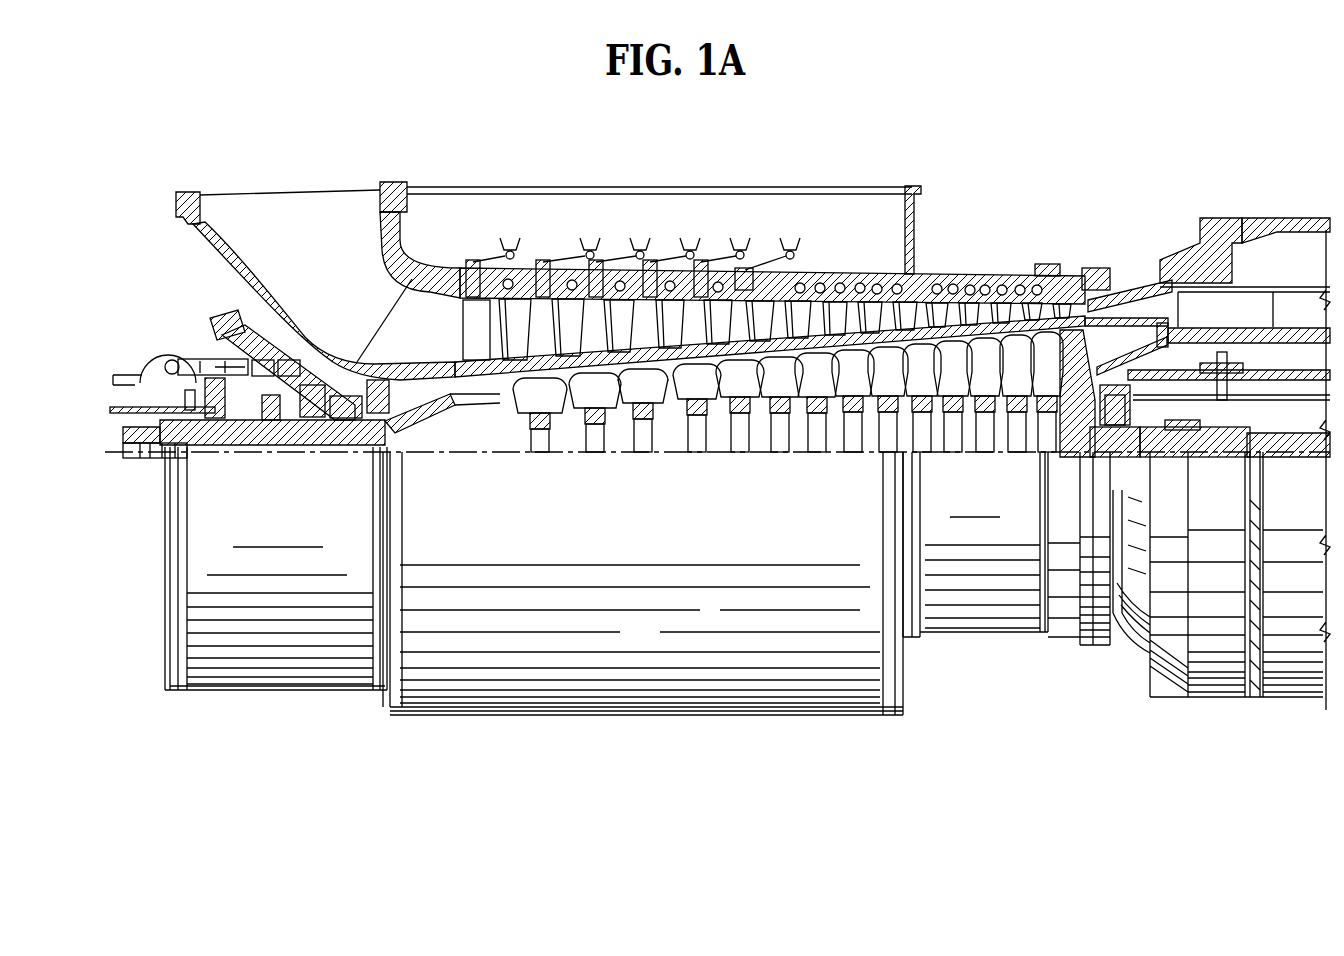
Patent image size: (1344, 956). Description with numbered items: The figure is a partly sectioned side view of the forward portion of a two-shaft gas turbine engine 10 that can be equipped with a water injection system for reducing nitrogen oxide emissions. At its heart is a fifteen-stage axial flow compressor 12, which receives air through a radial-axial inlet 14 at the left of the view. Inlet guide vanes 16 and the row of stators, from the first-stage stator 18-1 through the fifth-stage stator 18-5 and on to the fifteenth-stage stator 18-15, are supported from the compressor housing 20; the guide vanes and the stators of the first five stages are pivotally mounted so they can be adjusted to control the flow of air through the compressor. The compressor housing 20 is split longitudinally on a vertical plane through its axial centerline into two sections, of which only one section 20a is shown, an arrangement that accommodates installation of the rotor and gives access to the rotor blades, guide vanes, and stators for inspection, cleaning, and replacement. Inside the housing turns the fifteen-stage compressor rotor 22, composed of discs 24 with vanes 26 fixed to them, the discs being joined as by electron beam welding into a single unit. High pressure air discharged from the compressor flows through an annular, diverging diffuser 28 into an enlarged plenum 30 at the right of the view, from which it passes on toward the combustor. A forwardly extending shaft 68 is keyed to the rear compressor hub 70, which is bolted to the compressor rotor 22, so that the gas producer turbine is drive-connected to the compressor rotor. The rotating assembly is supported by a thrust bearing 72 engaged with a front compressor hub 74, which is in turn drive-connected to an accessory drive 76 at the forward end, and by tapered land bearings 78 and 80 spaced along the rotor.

The gas turbine engine 10 is at (946, 90).
The axial flow compressor 12 is at (628, 222).
The radial-axial inlet 14 is at (300, 196).
The inlet guide vanes 16 is at (460, 302).
The stator 18-1 is at (533, 330).
The stator 18-5 is at (745, 318).
The stator 18-15 is at (1072, 320).
The compressor housing 20 is at (744, 603).
The housing section 20a is at (552, 521).
The compressor rotor 22 is at (498, 422).
The discs 24 is at (627, 397).
The vanes 26 is at (625, 308).
The diffuser 28 is at (1160, 287).
The plenum 30 is at (1282, 248).
The shaft 68 is at (1190, 428).
The rear compressor hub 70 is at (1215, 440).
The thrust bearing 72 is at (270, 415).
The front compressor hub 74 is at (400, 378).
The accessory drive 76 is at (200, 325).
The tapered land bearing 78 is at (318, 417).
The tapered land bearing 80 is at (1145, 430).